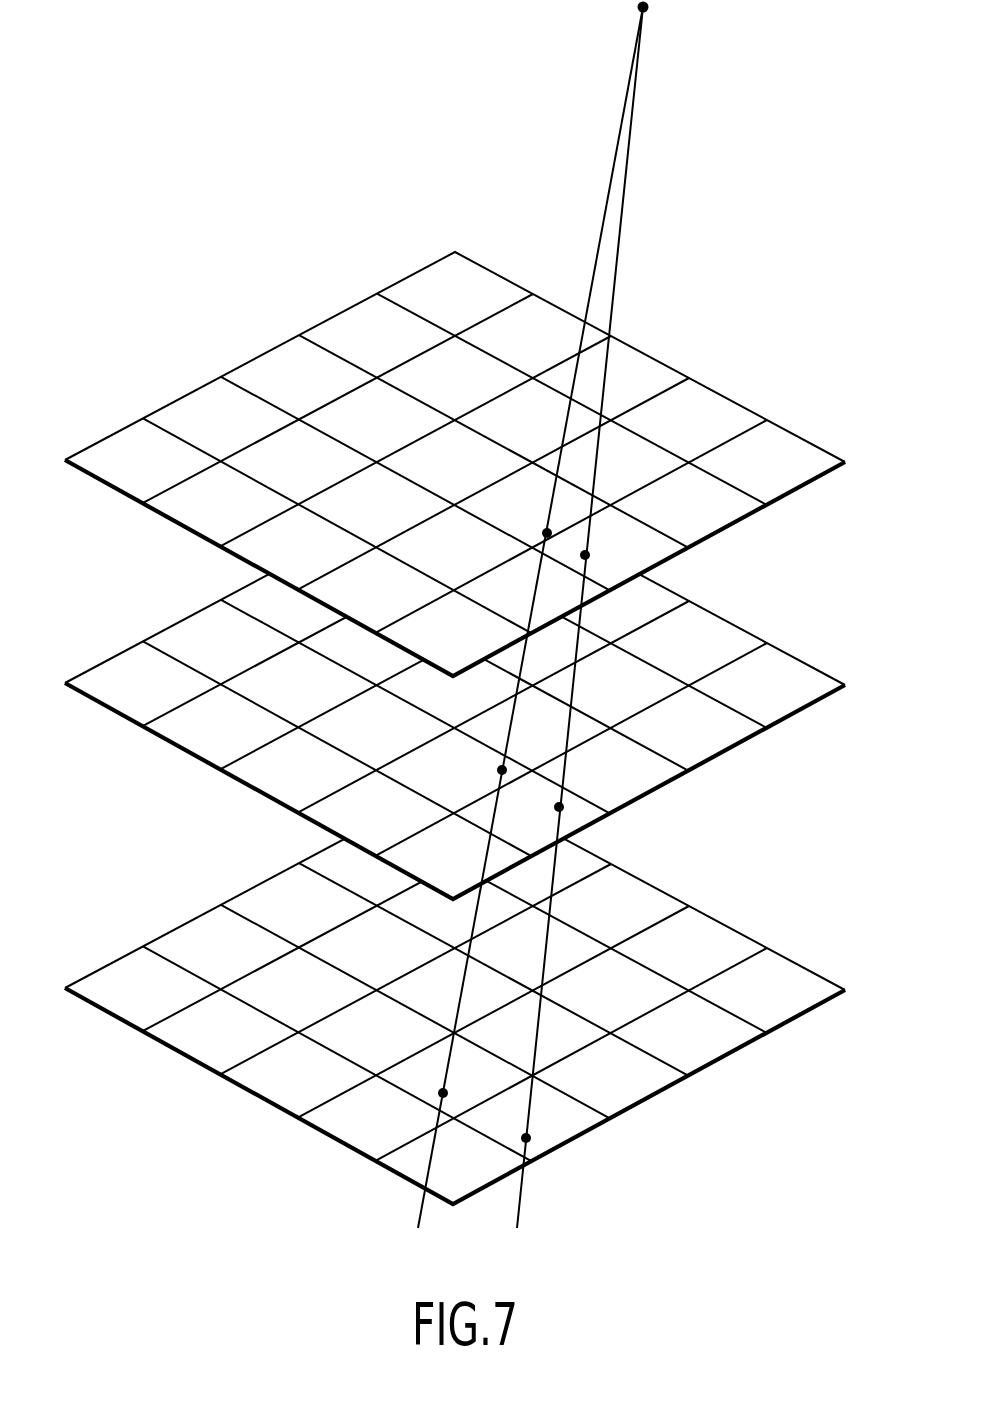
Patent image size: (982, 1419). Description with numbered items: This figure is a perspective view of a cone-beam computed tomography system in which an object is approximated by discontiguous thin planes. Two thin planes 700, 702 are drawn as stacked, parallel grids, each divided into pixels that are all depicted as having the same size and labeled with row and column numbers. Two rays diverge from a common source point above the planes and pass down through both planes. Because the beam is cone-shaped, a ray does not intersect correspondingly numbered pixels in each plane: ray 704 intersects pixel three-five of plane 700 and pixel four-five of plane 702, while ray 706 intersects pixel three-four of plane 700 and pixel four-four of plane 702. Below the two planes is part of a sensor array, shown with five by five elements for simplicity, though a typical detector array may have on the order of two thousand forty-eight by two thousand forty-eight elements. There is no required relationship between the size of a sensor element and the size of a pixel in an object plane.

The thin plane 700 is at (722, 396).
The thin plane 702 is at (808, 660).
The ray 704 is at (629, 152).
The ray 706 is at (616, 151).